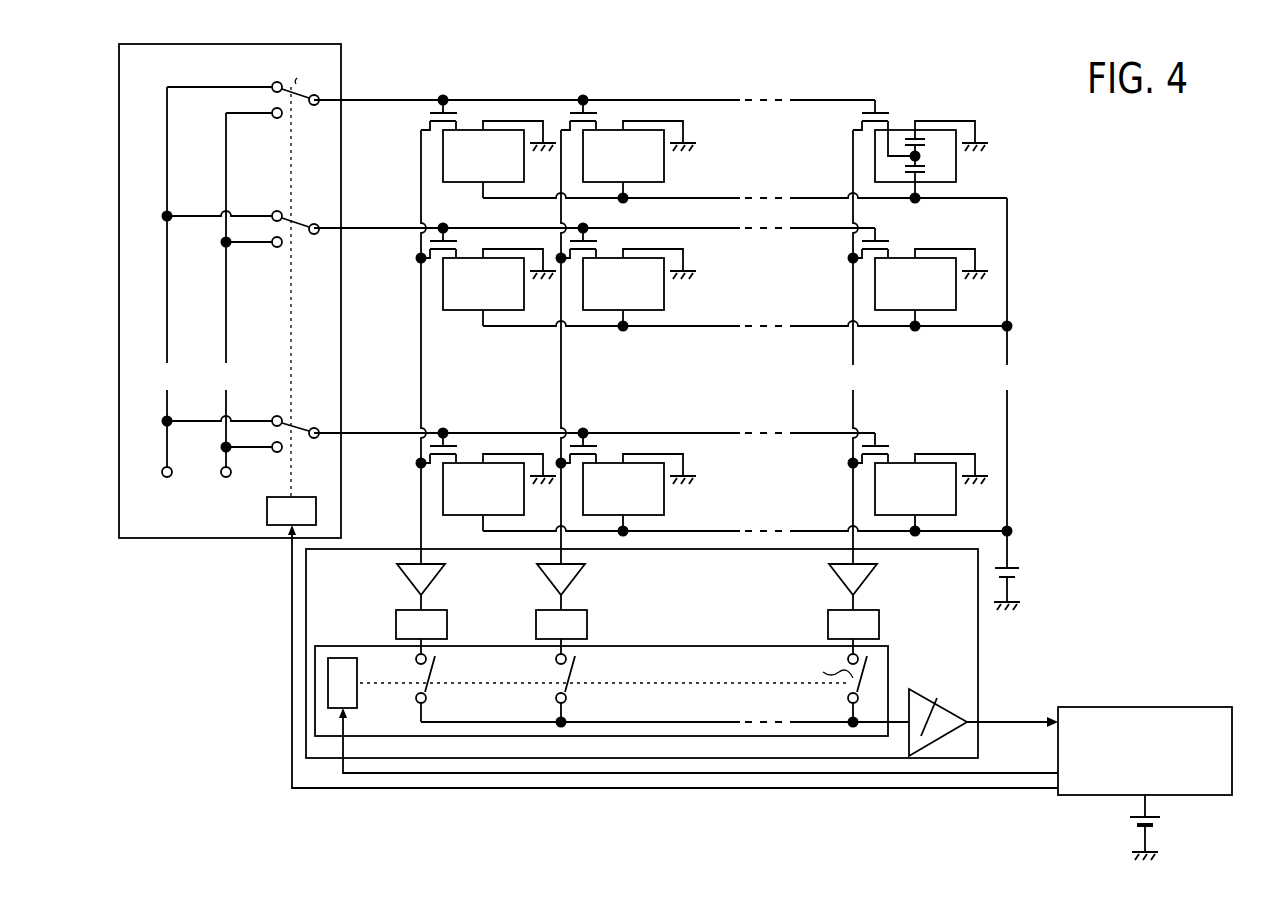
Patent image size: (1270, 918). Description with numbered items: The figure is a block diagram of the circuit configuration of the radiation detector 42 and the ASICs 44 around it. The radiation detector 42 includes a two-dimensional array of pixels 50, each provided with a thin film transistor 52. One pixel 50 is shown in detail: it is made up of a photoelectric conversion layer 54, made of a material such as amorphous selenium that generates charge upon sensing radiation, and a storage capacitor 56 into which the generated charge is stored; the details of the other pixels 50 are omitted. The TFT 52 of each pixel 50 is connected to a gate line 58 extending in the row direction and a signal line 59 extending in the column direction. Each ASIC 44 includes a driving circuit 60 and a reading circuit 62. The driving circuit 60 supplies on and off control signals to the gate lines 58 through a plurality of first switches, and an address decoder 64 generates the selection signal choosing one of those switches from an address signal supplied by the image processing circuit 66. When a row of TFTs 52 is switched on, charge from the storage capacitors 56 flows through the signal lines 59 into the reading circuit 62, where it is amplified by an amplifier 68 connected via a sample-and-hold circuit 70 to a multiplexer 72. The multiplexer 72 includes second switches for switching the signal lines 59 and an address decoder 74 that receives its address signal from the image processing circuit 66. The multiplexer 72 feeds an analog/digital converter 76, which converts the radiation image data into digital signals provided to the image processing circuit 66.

The radiation detector 42 is at (871, 68).
The ASIC 44 is at (275, 683).
The pixel 50 is at (663, 177).
The thin film transistor 52 is at (861, 114).
The photoelectric conversion layer 54 is at (930, 167).
The storage capacitor 56 is at (934, 142).
The gate line 58 is at (819, 100).
The signal line 59 is at (852, 156).
The driving circuit 60 is at (343, 62).
The reading circuit 62 is at (980, 650).
The address decoder 64 is at (306, 497).
The image processing circuit 66 is at (1212, 706).
The amplifier 68 is at (577, 585).
The sample-and-hold circuit 70 is at (587, 627).
The multiplexer 72 is at (734, 645).
The address decoder 74 is at (357, 695).
The analog/digital converter 76 is at (943, 702).